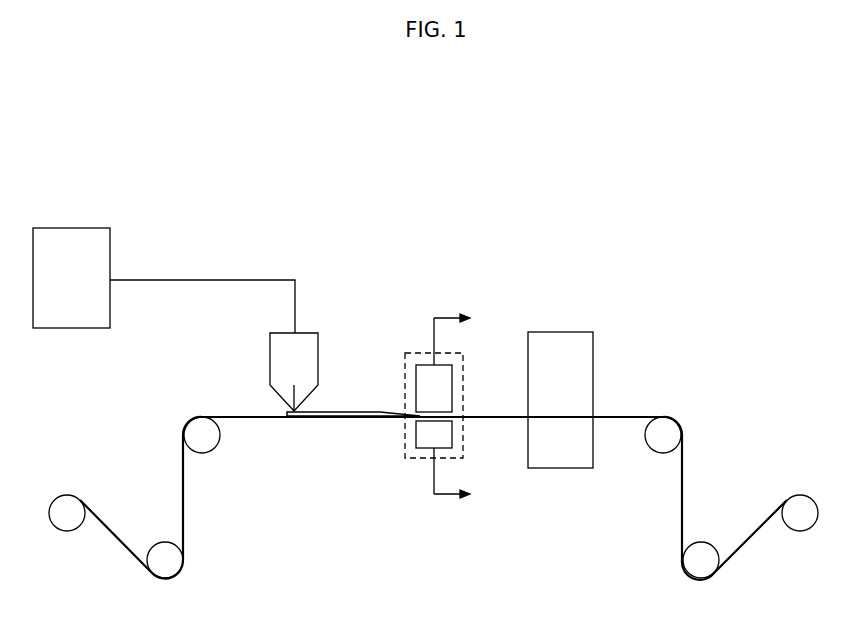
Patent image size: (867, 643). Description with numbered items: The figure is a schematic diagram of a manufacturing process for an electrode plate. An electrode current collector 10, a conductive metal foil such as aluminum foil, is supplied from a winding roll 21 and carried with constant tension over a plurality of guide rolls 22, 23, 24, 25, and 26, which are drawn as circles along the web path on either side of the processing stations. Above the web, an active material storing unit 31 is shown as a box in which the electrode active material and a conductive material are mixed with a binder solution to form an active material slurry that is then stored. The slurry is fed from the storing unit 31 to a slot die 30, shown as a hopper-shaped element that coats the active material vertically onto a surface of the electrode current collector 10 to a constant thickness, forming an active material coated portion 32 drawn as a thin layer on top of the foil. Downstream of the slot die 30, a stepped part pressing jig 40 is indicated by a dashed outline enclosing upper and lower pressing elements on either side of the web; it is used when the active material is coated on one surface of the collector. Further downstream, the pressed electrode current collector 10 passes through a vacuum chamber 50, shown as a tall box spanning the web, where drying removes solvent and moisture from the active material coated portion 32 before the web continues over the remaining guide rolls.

The electrode current collector 10 is at (184, 496).
The winding roll 21 is at (66, 531).
The guide roll 22 is at (163, 578).
The guide roll 23 is at (218, 447).
The guide roll 24 is at (656, 454).
The guide roll 25 is at (706, 542).
The guide roll 26 is at (797, 532).
The slot die 30 is at (310, 333).
The active material storing unit 31 is at (70, 228).
The active material coated portion 32 is at (352, 411).
The stepped part pressing jig 40 is at (410, 353).
The vacuum chamber 50 is at (558, 332).